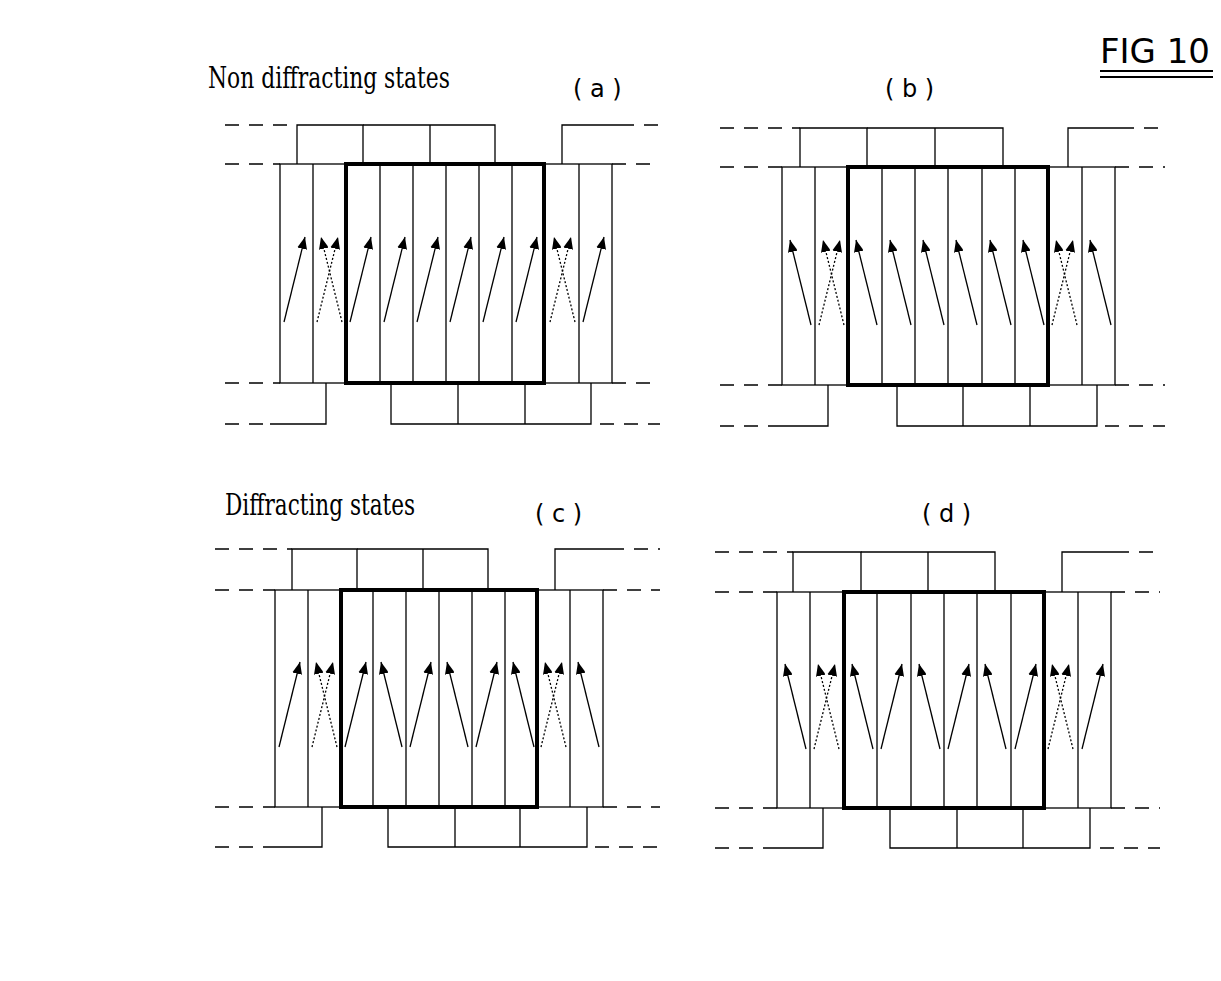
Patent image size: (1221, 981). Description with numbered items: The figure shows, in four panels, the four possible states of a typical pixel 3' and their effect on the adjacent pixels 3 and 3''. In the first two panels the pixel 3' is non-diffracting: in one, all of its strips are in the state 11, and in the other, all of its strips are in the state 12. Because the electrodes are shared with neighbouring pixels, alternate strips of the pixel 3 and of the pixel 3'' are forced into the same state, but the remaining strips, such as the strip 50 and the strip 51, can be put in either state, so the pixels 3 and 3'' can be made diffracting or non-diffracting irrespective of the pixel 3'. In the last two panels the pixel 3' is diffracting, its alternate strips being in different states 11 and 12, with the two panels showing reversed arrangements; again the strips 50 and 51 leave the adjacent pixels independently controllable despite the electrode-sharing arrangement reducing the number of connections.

The pixel 3 is at (517, 615).
The typical pixel 3' is at (698, 349).
The pixel 3'' is at (857, 358).
The state 11 is at (598, 219).
The state 12 is at (793, 310).
The strip 50 is at (331, 181).
The strip 51 is at (556, 368).